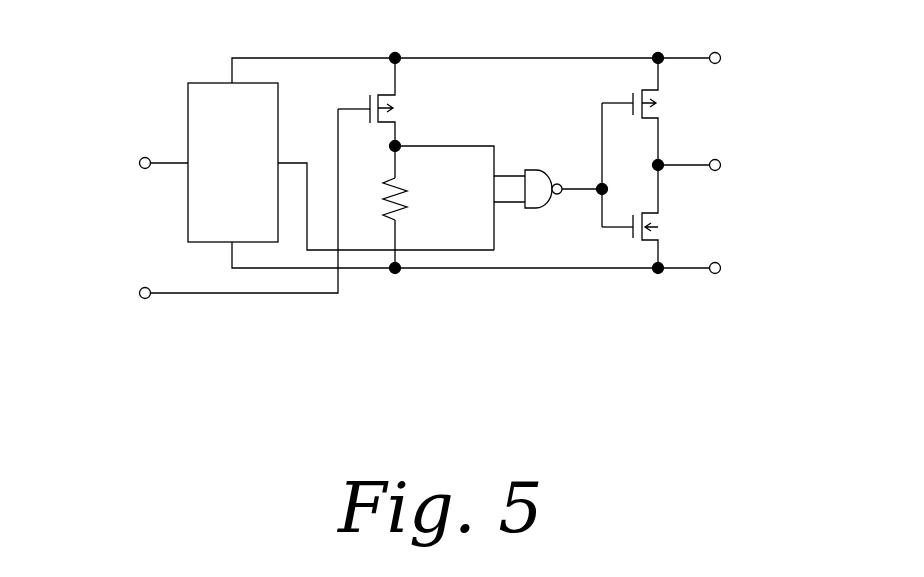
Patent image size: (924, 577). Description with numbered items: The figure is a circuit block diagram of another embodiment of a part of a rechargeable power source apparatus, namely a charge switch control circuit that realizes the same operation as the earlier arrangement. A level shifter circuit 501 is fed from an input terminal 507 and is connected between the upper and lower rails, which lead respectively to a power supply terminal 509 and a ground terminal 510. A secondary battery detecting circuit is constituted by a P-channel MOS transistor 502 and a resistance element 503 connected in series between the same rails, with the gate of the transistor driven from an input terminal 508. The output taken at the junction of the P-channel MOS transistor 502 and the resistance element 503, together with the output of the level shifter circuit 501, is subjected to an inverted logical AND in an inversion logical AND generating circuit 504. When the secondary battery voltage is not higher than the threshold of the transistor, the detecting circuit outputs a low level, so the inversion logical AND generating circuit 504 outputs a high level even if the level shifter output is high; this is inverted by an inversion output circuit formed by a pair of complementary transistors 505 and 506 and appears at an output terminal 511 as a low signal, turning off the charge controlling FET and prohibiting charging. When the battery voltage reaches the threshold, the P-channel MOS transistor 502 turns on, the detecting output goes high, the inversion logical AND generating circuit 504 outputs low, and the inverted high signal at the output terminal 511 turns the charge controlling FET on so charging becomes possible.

The level shifter circuit 501 is at (198, 235).
The P-channel MOS transistor 502 is at (453, 104).
The resistance element 503 is at (453, 199).
The inversion logical AND generating circuit 504 is at (567, 138).
The inversion output circuit transistor 505 is at (663, 97).
The inversion output circuit transistor 506 is at (707, 222).
The input terminal 507 is at (139, 163).
The input terminal 508 is at (139, 293).
The power supply terminal 509 is at (721, 59).
The ground terminal 510 is at (721, 269).
The output terminal 511 is at (721, 166).